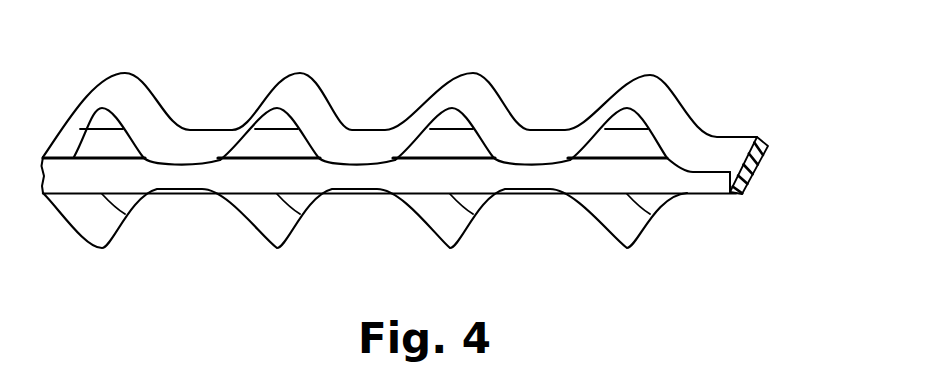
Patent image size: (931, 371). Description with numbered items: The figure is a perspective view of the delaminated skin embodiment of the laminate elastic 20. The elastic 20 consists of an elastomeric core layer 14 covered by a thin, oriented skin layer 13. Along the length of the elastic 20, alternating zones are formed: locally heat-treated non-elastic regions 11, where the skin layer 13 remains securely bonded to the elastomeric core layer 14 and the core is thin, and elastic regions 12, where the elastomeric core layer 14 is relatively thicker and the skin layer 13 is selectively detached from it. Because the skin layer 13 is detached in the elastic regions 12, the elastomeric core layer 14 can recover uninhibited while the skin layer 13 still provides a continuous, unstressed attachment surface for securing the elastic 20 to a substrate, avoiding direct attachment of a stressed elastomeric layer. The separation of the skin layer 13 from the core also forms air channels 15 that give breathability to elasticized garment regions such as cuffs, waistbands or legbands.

The non-elastic regions 11 is at (383, 130).
The elastic regions 12 is at (593, 163).
The skin layer 13 is at (318, 83).
The elastomeric core layer 14 is at (710, 183).
The channels 15 is at (241, 167).
The elastic 20 is at (775, 131).